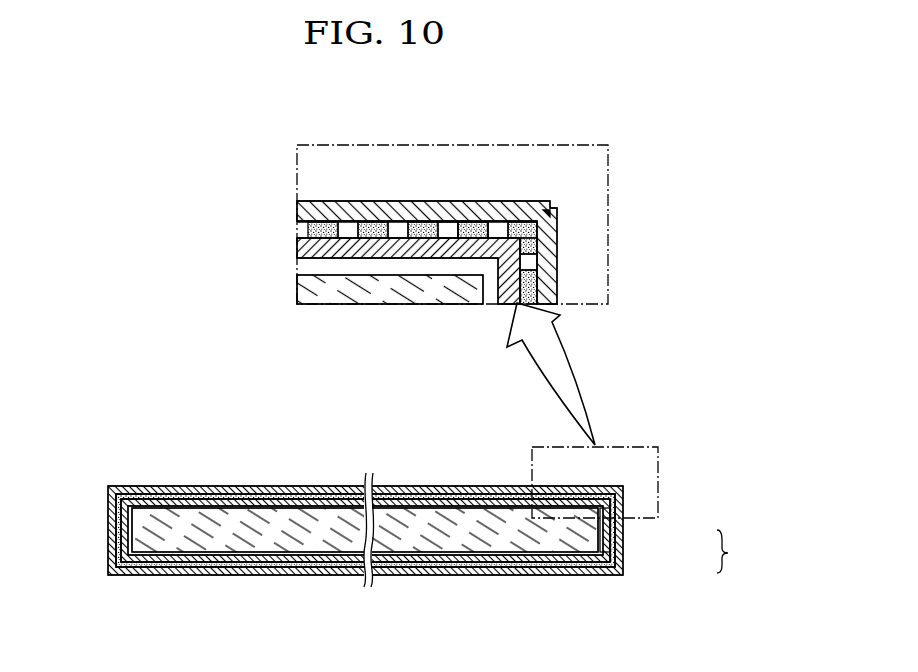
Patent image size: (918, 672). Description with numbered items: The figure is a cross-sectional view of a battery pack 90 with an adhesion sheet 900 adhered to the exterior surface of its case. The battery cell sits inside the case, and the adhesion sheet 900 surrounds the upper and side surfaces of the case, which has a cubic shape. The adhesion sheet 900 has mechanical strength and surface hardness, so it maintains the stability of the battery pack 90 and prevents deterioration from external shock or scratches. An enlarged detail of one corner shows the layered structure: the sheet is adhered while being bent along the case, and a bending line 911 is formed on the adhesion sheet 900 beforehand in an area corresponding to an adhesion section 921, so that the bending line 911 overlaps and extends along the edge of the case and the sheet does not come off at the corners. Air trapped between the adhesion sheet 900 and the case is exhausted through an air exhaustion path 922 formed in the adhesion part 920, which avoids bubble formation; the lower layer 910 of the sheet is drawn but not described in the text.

The battery pack 90 is at (746, 142).
The adhesion sheet 900 is at (438, 532).
The upper protective layer 910 is at (623, 533).
The bending line 911 is at (549, 208).
The adhesion part 920 is at (623, 546).
The adhesion section 921 is at (475, 222).
The air exhaustion path 922 is at (448, 222).